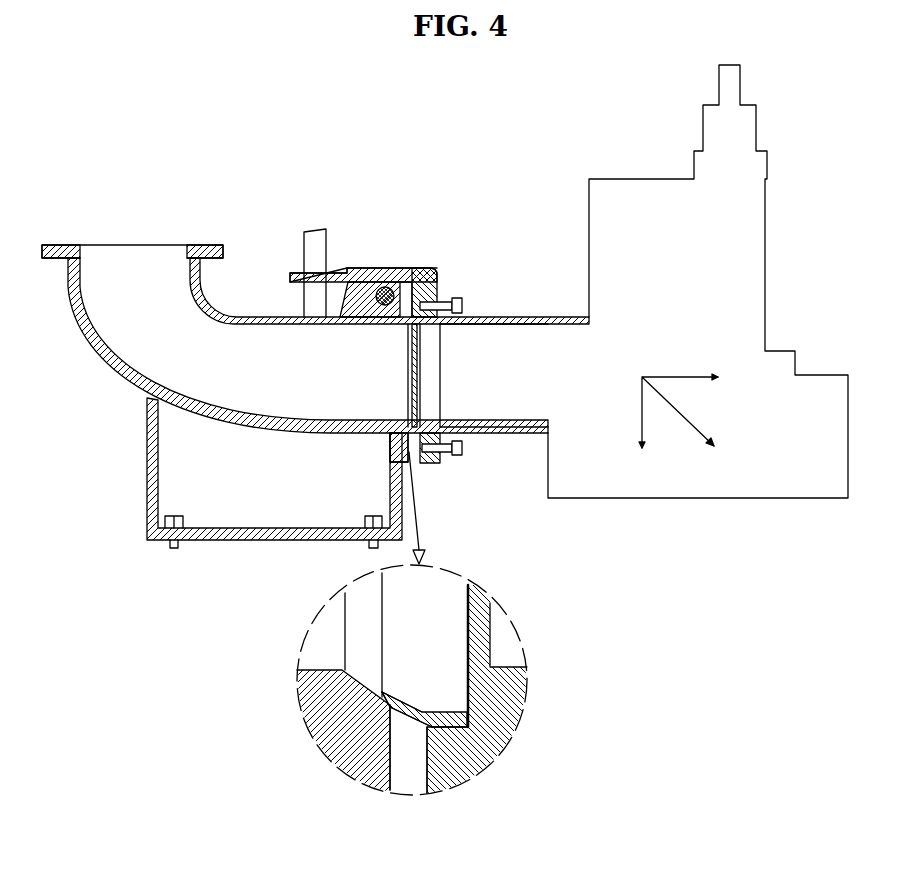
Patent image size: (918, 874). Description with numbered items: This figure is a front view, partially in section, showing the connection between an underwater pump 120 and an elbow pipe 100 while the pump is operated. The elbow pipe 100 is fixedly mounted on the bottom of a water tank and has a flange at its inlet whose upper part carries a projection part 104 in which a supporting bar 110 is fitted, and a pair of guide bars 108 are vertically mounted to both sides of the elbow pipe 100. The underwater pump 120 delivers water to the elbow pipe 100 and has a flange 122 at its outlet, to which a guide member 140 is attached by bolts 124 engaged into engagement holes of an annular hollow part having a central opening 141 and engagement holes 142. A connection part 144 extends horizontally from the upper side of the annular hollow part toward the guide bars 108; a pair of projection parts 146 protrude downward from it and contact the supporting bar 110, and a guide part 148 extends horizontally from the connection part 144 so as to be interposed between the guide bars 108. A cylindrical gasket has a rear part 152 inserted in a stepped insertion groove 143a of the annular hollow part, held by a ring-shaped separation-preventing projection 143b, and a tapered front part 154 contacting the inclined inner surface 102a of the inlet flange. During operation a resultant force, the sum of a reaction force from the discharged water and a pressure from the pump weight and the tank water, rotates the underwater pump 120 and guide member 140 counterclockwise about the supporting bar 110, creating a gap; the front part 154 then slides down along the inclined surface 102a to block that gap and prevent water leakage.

The elbow pipe 100 is at (111, 371).
The inclined inner surface 102a is at (342, 668).
The projection part 104 is at (362, 317).
The guide bars 108 is at (312, 253).
The supporting bar 110 is at (388, 288).
The underwater pump 120 is at (627, 204).
The flange 122 is at (458, 300).
The bolts 124 is at (463, 450).
The guide member 140 is at (374, 250).
The central opening 141 is at (430, 372).
The engagement holes 142 is at (432, 462).
The stepped insertion groove 143a is at (493, 747).
The ring-shaped separation-preventing projection 143b is at (478, 642).
The connection part 144 is at (353, 270).
The projection parts 146 is at (345, 295).
The guide part 148 is at (308, 279).
The rear part 152 is at (447, 710).
The front part 154 is at (387, 693).